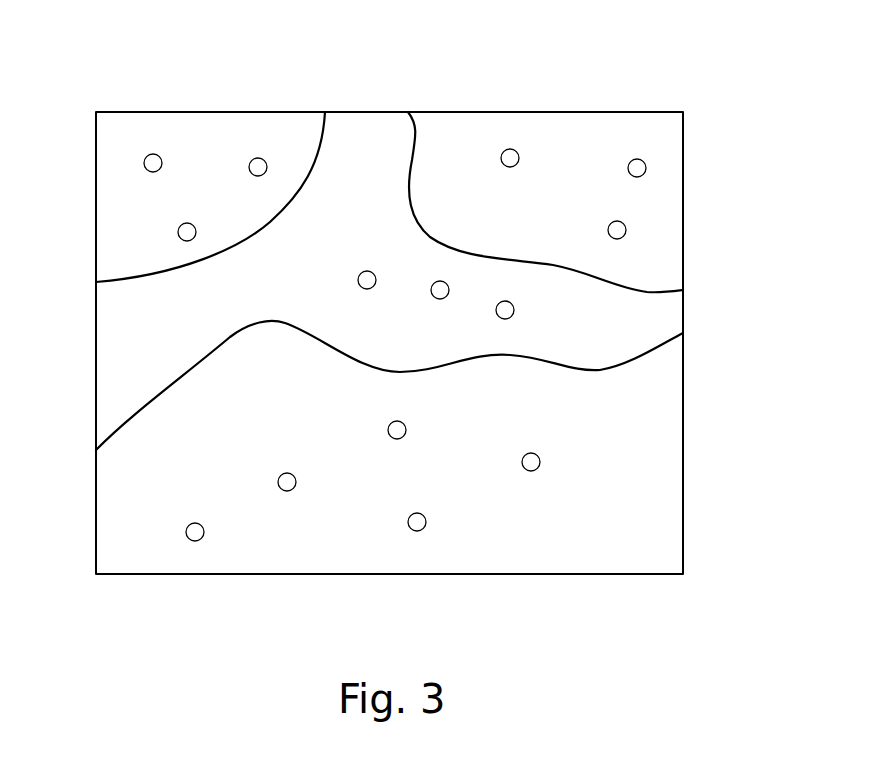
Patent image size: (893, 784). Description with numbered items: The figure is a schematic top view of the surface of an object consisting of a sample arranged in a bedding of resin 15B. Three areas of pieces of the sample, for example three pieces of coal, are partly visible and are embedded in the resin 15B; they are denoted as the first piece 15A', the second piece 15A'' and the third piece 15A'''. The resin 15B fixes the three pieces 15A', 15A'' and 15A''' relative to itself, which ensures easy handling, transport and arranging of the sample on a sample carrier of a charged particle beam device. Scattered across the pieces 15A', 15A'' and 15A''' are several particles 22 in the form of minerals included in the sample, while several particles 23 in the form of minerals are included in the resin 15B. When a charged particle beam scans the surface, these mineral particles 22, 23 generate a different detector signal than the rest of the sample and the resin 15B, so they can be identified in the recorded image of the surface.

The first piece of the sample 15A' is at (210, 155).
The second piece of the sample 15A'' is at (604, 202).
The third piece of the sample 15A''' is at (458, 343).
The resin 15B is at (678, 313).
The particles in the sample 22 is at (153, 154).
The particles in the resin 23 is at (366, 271).